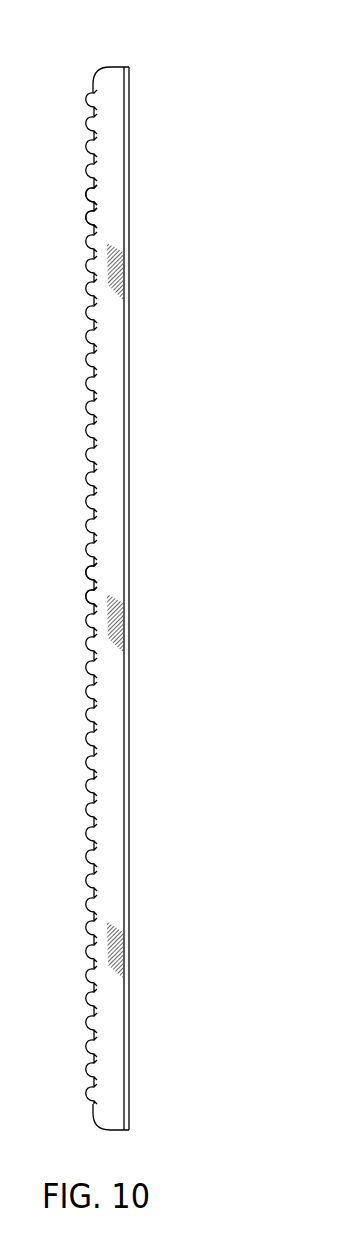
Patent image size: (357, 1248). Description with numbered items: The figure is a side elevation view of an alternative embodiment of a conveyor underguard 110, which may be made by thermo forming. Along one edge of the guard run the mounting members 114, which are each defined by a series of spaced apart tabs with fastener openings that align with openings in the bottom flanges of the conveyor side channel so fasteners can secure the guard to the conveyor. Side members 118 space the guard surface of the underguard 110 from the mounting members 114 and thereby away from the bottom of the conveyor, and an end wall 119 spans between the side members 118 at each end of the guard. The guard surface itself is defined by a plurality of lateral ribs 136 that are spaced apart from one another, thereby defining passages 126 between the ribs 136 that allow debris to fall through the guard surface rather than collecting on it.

The conveyor underguard 110 is at (150, 570).
The mounting member 114 is at (130, 347).
The side member 118 is at (118, 145).
The end wall 119 is at (115, 67).
The passage 126 is at (84, 147).
The lateral rib 136 is at (84, 227).